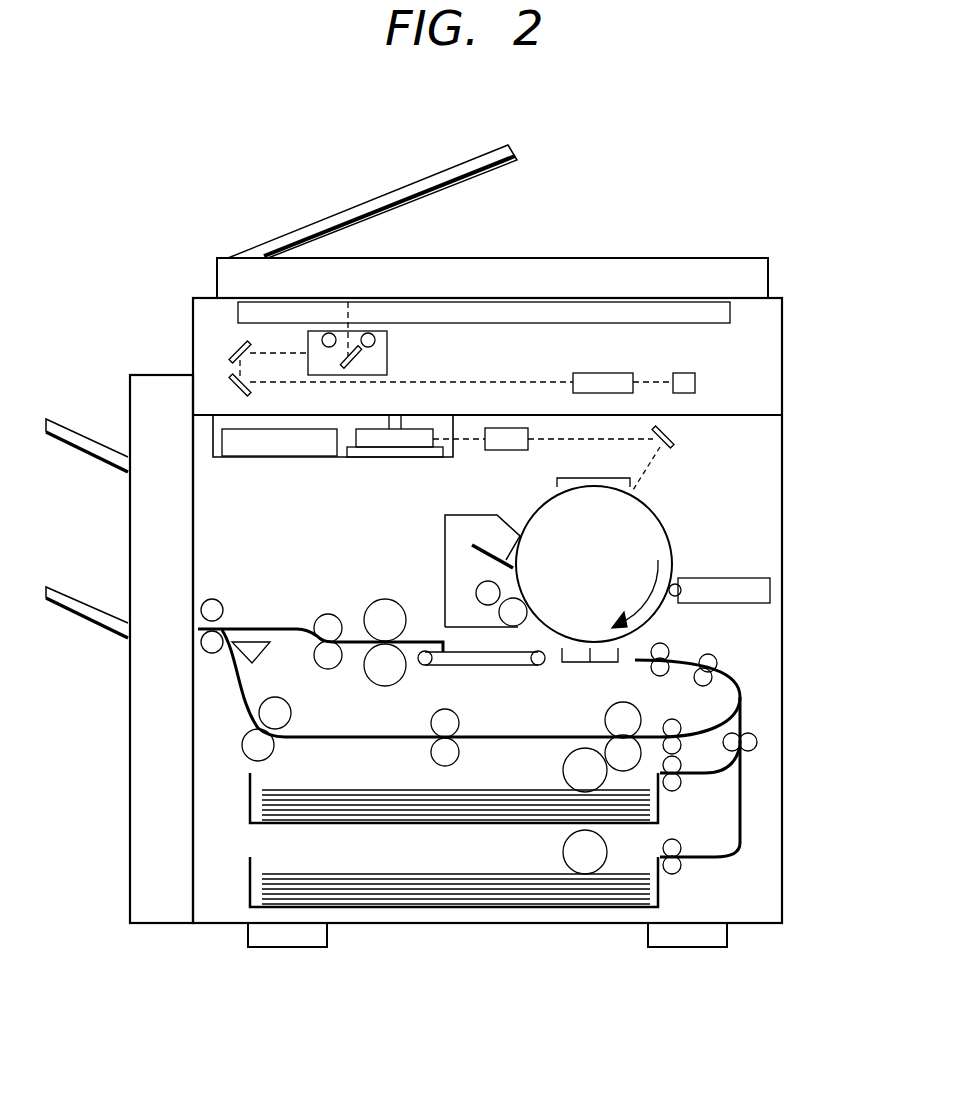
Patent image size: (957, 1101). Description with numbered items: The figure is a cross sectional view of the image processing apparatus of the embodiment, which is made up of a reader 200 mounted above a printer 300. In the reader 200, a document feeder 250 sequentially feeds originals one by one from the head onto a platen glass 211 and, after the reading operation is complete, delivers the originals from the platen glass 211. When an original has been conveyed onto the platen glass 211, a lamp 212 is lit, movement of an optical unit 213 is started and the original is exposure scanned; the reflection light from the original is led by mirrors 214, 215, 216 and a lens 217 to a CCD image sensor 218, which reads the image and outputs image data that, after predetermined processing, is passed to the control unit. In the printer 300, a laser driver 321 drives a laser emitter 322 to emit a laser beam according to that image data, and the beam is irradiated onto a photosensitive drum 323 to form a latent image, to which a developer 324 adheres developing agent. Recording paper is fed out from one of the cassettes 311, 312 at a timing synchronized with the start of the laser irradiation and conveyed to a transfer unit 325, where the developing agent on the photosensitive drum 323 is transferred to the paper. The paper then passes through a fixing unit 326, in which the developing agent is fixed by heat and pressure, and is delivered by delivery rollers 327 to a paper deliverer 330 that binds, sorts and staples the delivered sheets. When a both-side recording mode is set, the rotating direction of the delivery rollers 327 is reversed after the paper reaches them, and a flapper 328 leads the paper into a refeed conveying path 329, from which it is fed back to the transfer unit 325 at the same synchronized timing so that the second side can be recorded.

The reader 200 is at (806, 125).
The platen glass 211 is at (655, 310).
The lamp 212 is at (374, 334).
The optical unit 213 is at (387, 347).
The mirror 214 is at (360, 360).
The mirror 215 is at (236, 345).
The mirror 216 is at (230, 384).
The lens 217 is at (610, 373).
The CCD image sensor 218 is at (692, 373).
The document feeder 250 is at (360, 204).
The printer 300 is at (806, 422).
The cassette 311 is at (661, 800).
The cassette 312 is at (661, 882).
The laser driver 321 is at (249, 456).
The laser emitter 322 is at (373, 457).
The photosensitive drum 323 is at (664, 508).
The developer 324 is at (735, 578).
The transfer unit 325 is at (577, 663).
The fixing unit 326 is at (362, 650).
The delivery rollers 327 is at (223, 607).
The flapper 328 is at (255, 652).
The refeed conveying path 329 is at (432, 750).
The paper deliverer 330 is at (150, 925).